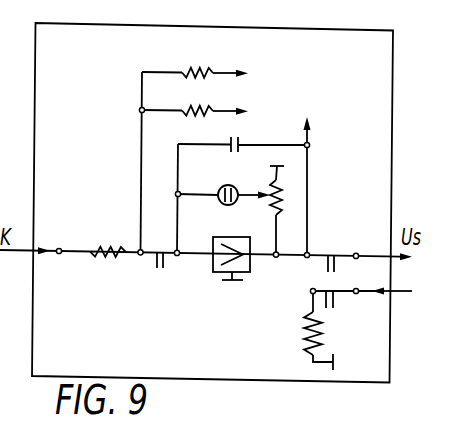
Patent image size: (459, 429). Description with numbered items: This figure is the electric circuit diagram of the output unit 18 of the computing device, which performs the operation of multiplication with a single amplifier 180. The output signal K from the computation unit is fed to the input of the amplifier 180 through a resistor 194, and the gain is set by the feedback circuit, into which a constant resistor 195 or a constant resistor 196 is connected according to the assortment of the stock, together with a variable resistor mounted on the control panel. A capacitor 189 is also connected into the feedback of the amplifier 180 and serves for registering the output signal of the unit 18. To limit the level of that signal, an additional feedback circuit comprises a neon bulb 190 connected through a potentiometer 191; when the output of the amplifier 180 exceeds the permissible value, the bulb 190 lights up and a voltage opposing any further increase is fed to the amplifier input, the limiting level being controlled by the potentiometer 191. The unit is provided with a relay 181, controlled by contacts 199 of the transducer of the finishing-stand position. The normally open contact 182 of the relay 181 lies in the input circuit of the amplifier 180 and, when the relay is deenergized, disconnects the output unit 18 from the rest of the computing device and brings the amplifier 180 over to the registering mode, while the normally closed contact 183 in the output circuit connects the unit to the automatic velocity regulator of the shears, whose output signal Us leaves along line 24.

The output unit 18 is at (386, 84).
The control input line 24 is at (396, 306).
The amplifier 180 is at (243, 270).
The relay 181 is at (305, 330).
The normally open contact 182 is at (160, 247).
The normally closed contact 183 is at (334, 251).
The capacitor 189 is at (244, 134).
The neon bulb 190 is at (224, 184).
The potentiometer 191 is at (286, 210).
The resistor 194 is at (108, 239).
The constant resistor 195 is at (195, 60).
The constant resistor 196 is at (195, 98).
The contacts of transducer 199 is at (348, 305).